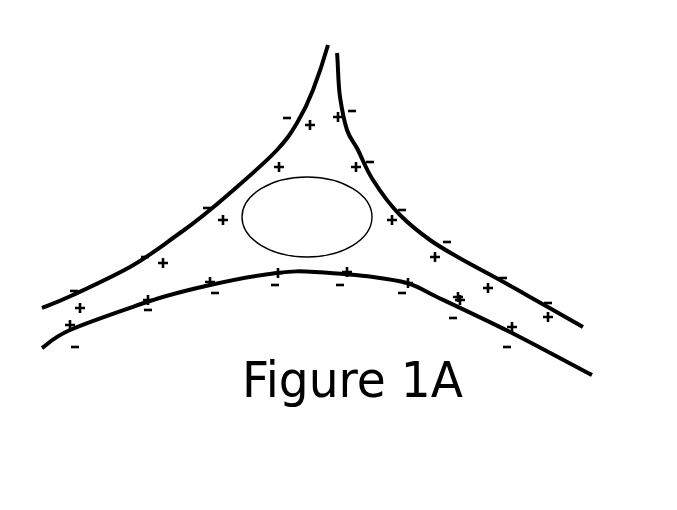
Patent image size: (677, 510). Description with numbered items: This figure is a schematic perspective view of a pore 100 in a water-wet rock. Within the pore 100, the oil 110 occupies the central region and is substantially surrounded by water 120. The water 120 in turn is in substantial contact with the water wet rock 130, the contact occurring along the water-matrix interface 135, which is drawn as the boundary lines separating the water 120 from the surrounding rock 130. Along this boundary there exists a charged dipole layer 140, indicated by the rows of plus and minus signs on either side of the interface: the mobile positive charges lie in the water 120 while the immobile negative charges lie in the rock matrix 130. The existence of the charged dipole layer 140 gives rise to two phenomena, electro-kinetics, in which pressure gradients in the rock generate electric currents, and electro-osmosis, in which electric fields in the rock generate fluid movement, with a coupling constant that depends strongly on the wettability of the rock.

The pore 100 is at (323, 142).
The oil 110 is at (307, 217).
The water 120 is at (311, 216).
The water wet rock 130 is at (291, 254).
The water-matrix interface 135 is at (312, 186).
The charged dipole layer 140 is at (338, 338).